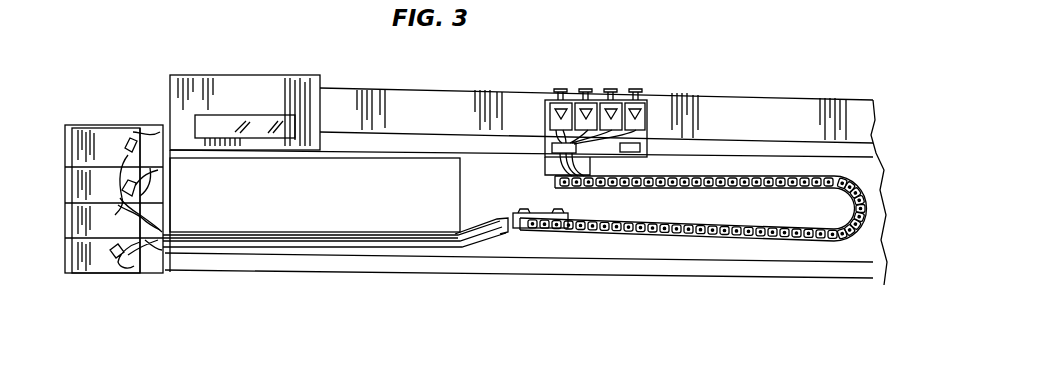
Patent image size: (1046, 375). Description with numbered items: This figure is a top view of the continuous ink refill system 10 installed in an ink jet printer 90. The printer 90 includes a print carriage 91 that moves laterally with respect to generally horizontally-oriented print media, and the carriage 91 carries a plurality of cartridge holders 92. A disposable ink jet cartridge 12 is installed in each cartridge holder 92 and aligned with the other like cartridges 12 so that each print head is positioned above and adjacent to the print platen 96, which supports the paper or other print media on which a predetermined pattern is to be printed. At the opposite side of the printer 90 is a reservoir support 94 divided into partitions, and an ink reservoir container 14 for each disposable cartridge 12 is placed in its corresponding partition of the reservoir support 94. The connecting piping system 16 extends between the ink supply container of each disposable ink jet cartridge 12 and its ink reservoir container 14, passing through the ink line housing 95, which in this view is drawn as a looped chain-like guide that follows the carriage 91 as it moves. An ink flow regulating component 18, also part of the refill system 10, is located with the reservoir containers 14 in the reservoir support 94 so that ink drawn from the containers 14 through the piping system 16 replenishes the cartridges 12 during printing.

The continuous ink refill system 10 is at (181, 297).
The disposable ink jet cartridge 12 is at (645, 100).
The ink reservoir container 14 is at (80, 268).
The connecting piping system 16 is at (438, 247).
The ink flow regulating component 18 is at (118, 275).
The ink jet printer 90 is at (355, 283).
The print carriage 91 is at (650, 140).
The cartridge holders 92 is at (650, 136).
The reservoir support 94 is at (97, 127).
The ink line housing 95 is at (725, 233).
The print platen 96 is at (790, 103).